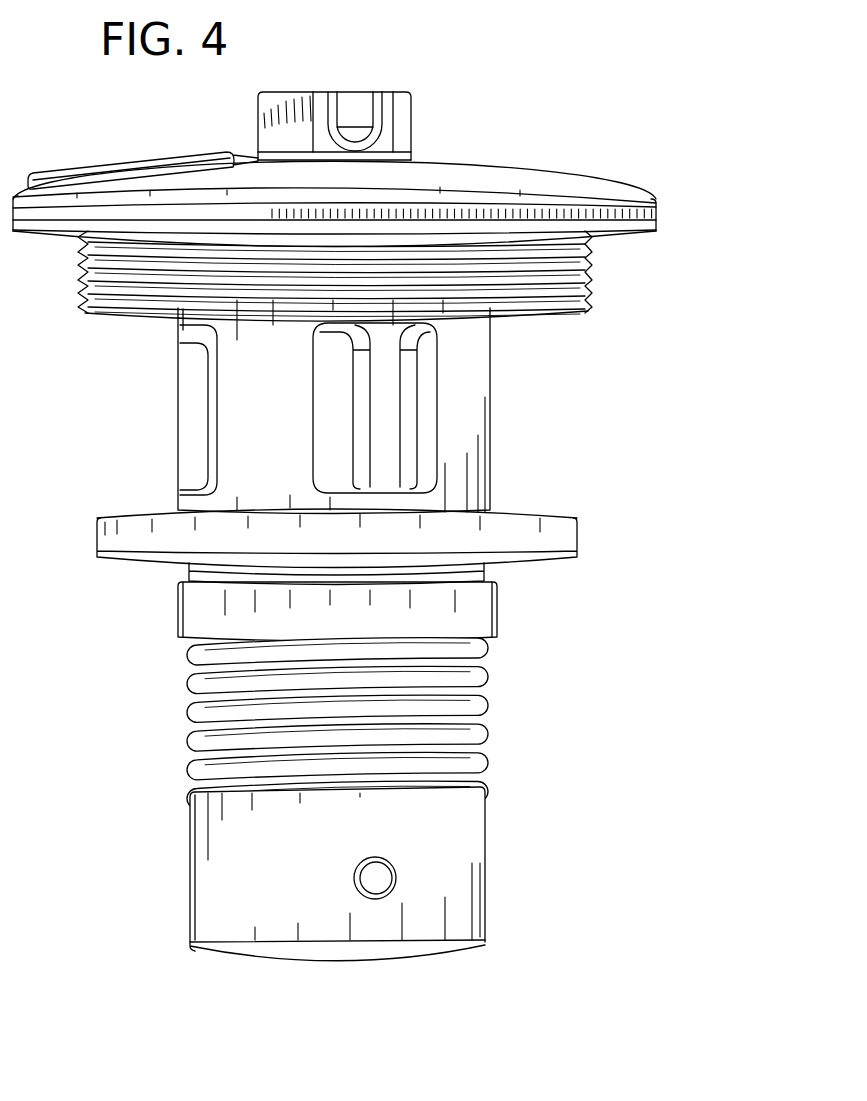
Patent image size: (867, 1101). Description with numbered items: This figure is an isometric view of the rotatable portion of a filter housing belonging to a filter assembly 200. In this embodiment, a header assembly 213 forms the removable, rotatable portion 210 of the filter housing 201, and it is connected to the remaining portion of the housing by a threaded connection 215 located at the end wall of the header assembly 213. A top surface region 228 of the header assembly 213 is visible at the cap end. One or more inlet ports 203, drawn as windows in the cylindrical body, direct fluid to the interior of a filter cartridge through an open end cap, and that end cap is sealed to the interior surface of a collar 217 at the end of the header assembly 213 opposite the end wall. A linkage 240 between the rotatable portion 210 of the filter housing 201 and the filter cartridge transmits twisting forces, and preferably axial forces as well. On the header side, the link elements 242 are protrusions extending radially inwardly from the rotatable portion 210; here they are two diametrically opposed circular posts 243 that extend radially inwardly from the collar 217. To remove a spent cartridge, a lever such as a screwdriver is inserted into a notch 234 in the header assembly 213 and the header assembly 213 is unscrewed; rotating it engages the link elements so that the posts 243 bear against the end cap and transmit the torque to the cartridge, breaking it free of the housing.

The filter assembly 200 is at (646, 110).
The filter housing 201 is at (653, 193).
The rotatable portion 210 is at (110, 183).
The header assembly 213 is at (195, 177).
The top surface of cap 228 is at (490, 177).
The notch 234 is at (354, 107).
The threaded connection 215 is at (590, 267).
The inlet ports 203 is at (188, 425).
The collar 217 is at (277, 852).
The header assembly link elements 242 is at (382, 868).
The circular posts 243 is at (371, 886).
The linkage 240 is at (403, 893).